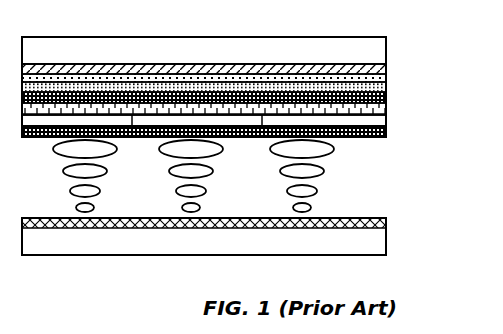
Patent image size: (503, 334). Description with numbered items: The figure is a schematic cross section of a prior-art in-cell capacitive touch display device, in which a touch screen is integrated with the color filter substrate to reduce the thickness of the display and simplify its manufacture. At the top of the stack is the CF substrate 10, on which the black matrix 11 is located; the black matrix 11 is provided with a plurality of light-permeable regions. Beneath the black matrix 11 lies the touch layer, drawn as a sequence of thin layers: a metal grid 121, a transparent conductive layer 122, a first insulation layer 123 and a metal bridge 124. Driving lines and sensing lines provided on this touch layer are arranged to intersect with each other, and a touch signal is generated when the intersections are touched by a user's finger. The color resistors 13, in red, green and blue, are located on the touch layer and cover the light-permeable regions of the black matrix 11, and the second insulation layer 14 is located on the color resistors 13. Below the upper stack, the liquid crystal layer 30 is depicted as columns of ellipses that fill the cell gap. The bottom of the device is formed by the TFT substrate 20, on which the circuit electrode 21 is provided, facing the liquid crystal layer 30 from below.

The CF substrate 10 is at (368, 56).
The black matrix 11 is at (370, 72).
The metal grid 121 is at (370, 80).
The transparent conductive layer 122 is at (370, 90).
The first insulation layer 123 is at (368, 99).
The metal bridge 124 is at (368, 110).
The color resistors 13 is at (386, 122).
The second insulation layer 14 is at (386, 131).
The liquid crystal layer 30 is at (300, 176).
The circuit electrode 21 is at (375, 221).
The TFT substrate 20 is at (375, 246).